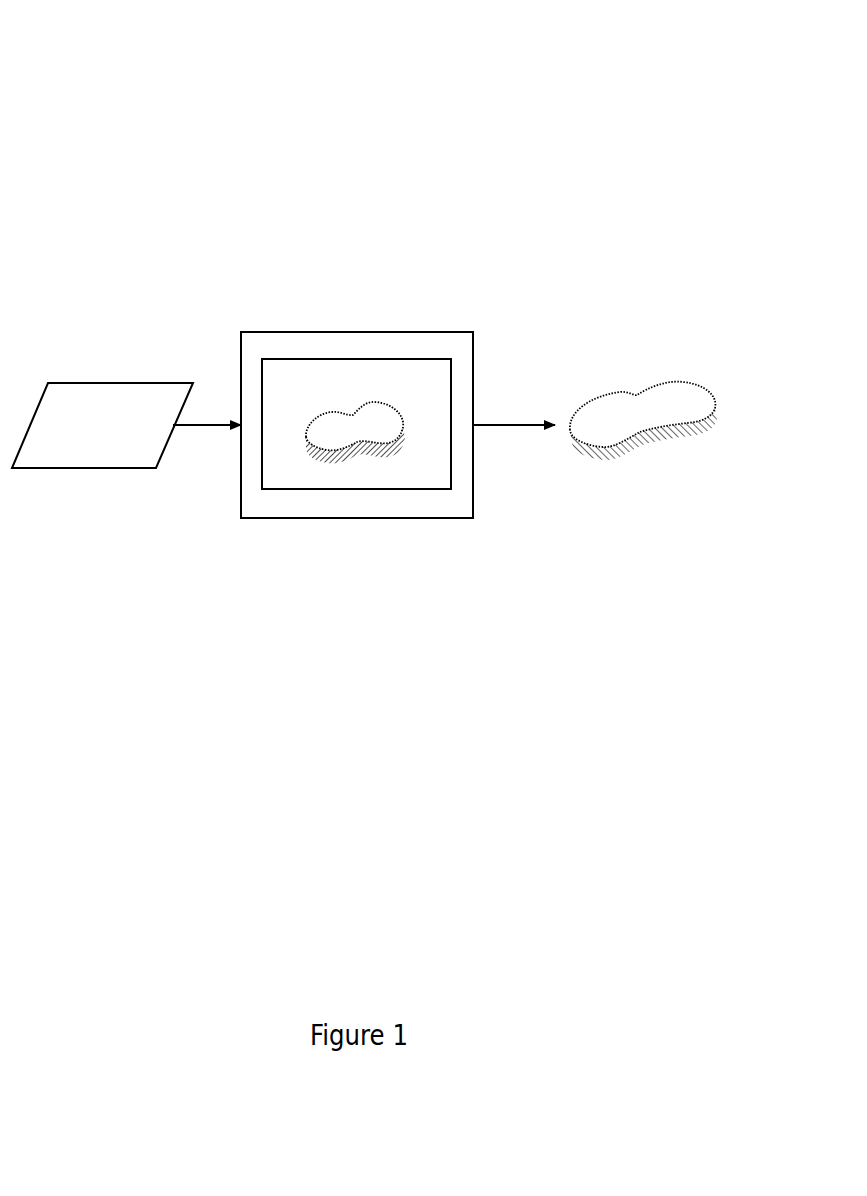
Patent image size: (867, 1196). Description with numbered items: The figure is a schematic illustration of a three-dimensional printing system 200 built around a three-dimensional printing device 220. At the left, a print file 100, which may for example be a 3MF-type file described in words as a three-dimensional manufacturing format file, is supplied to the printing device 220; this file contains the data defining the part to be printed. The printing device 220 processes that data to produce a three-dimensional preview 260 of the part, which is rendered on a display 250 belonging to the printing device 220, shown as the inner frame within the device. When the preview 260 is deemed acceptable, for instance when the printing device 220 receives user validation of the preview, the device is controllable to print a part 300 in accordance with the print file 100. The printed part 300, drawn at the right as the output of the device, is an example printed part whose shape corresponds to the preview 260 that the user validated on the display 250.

The print file 100 is at (71, 441).
The 3D printing system 200 is at (161, 84).
The 3D printing device 220 is at (358, 332).
The display 250 is at (297, 490).
The preview 260 is at (392, 453).
The part 300 is at (668, 382).